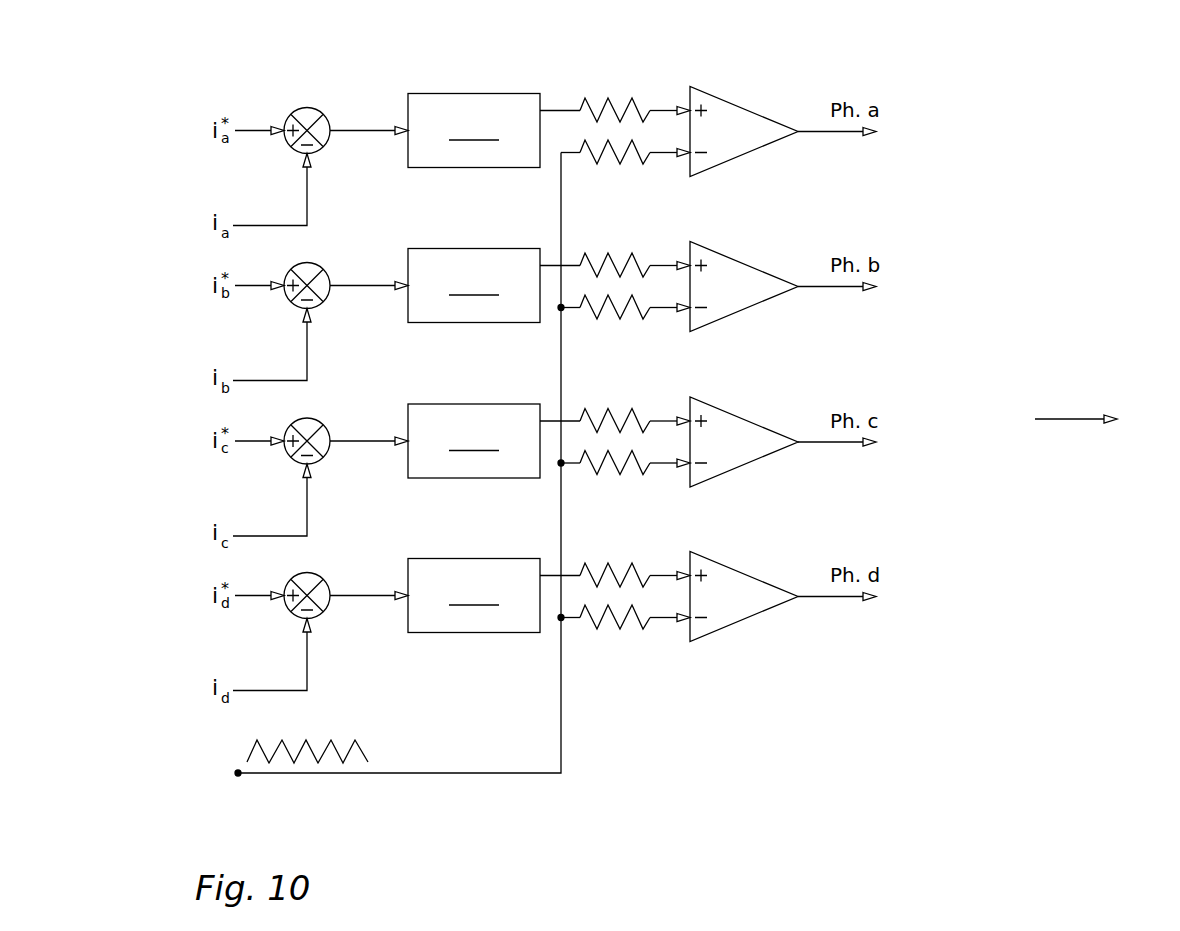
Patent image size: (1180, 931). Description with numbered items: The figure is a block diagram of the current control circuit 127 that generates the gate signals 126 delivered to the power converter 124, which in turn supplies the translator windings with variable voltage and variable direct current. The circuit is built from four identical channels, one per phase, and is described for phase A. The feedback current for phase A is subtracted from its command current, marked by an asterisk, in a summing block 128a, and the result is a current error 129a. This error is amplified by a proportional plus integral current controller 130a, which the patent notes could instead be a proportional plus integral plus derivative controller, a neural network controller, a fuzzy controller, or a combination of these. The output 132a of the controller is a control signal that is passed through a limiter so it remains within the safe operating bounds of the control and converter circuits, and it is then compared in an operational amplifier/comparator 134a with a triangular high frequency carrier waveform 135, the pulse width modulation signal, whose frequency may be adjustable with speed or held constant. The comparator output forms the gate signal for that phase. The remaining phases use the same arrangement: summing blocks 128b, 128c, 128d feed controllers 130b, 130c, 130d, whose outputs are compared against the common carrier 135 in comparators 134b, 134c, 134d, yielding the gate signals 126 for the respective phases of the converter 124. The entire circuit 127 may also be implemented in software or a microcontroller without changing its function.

The power converter 124 is at (1159, 428).
The gate signals 126 is at (1025, 428).
The current control circuit 127 is at (735, 752).
The summing block 128a is at (300, 107).
The summing block 128b is at (316, 264).
The summing block 128c is at (316, 419).
The summing block 128d is at (316, 573).
The current error 129a is at (358, 127).
The proportional plus integral current controller 130a is at (474, 131).
The proportional plus integral current controller 130b is at (474, 286).
The proportional plus integral current controller 130c is at (474, 441).
The proportional plus integral current controller 130d is at (474, 596).
The output of the PI controller 132a is at (632, 100).
The operational amplifier/comparator 134a is at (765, 118).
The operational amplifier/comparator 134b is at (730, 257).
The operational amplifier/comparator 134c is at (730, 412).
The operational amplifier/comparator 134d is at (730, 567).
The triangular high frequency carrier waveform 135 is at (358, 746).